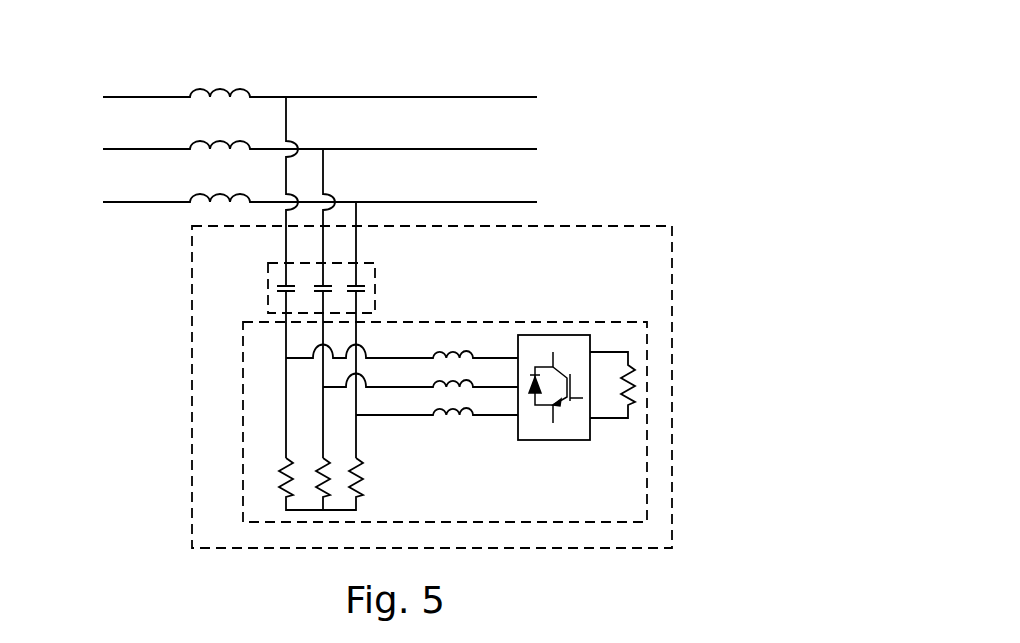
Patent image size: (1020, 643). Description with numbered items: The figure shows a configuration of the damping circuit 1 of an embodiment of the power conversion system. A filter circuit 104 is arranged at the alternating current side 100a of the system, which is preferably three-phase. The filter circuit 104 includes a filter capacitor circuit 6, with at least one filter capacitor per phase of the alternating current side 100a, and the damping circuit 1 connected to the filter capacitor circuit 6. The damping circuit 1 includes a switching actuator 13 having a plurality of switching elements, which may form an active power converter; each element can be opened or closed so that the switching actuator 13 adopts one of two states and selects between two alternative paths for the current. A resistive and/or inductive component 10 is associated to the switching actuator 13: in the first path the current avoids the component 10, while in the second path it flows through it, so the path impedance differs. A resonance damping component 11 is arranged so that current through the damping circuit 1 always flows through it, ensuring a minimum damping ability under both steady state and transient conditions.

The alternating current side 100a is at (587, 118).
The filter circuit 104 is at (191, 292).
The damping circuit 1 is at (242, 438).
The filter capacitor circuit 6 is at (375, 270).
The switching actuator 13 is at (570, 335).
The resistive and/or inductive component 10 is at (630, 383).
The resonance damping component 11 is at (362, 470).